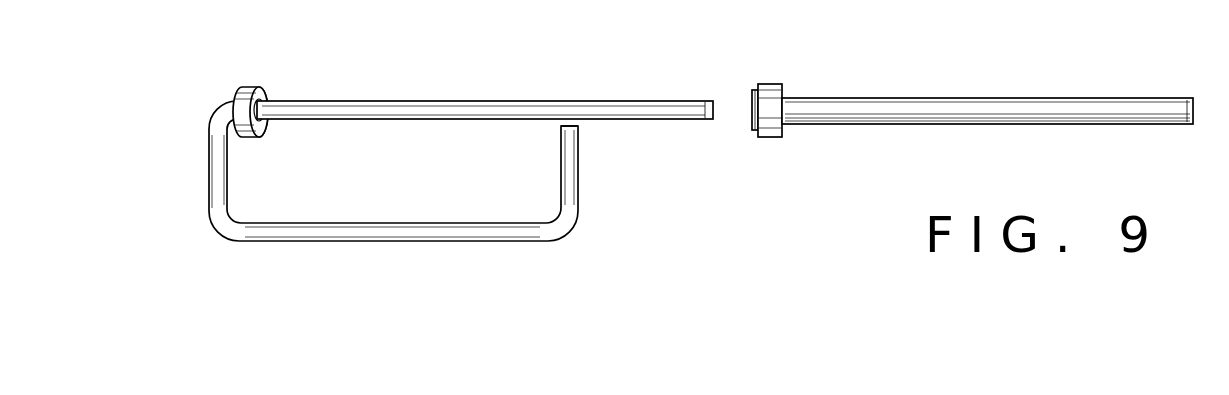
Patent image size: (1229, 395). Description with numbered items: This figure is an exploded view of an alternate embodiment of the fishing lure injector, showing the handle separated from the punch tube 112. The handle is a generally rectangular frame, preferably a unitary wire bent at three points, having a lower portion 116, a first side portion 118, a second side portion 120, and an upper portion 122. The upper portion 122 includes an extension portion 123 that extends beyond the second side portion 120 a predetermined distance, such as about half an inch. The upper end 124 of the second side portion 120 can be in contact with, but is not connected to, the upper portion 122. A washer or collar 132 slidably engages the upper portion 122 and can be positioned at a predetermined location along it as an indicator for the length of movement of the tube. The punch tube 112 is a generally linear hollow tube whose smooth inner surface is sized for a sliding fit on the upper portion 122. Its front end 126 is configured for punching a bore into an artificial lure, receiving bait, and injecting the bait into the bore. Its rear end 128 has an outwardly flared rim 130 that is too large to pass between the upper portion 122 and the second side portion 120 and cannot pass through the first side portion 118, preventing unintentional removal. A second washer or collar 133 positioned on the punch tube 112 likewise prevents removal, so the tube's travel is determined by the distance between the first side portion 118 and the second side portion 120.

The punch tube 112 is at (923, 98).
The lower portion 116 is at (432, 232).
The first side portion 118 is at (209, 162).
The second side portion 120 is at (573, 192).
The upper portion 122 is at (428, 100).
The extension portion 123 is at (688, 101).
The upper end 124 is at (572, 142).
The front end 126 is at (1185, 97).
The rear end 128 is at (867, 118).
The flared rim 130 is at (753, 92).
The washer 132 is at (245, 92).
The second washer 133 is at (775, 137).